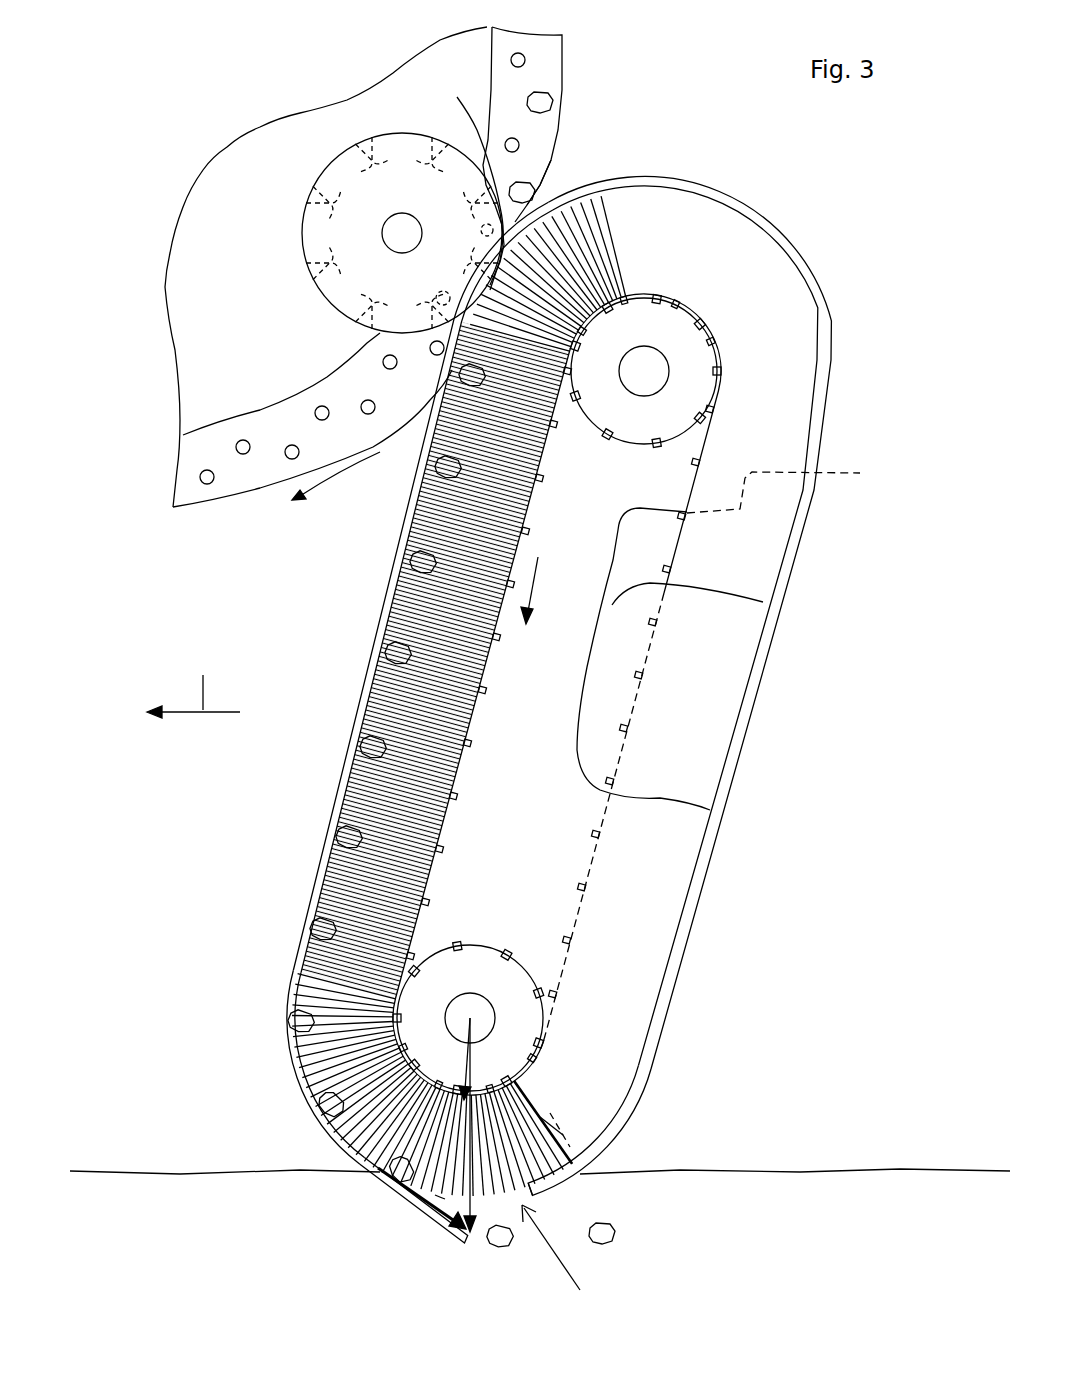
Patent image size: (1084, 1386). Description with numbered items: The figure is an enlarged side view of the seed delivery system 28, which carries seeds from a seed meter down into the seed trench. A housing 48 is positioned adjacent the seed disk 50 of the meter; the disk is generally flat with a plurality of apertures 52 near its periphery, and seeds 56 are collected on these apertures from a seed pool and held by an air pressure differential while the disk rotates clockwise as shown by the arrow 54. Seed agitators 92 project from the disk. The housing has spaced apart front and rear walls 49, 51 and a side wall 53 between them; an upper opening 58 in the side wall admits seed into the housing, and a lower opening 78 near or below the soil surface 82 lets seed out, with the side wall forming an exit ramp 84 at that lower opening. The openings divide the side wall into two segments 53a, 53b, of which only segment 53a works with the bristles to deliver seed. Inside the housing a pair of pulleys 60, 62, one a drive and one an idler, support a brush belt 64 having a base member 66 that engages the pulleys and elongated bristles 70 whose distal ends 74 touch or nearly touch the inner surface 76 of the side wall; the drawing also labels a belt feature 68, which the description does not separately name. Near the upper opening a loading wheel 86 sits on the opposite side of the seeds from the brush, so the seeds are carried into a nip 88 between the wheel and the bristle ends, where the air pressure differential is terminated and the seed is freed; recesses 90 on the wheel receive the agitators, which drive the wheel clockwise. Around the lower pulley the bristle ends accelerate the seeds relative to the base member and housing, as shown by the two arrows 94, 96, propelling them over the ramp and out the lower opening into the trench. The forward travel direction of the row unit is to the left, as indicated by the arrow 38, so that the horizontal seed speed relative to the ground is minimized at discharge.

The seed delivery system 28 is at (853, 286).
The arrow 38 is at (193, 682).
The housing 48 is at (540, 729).
The front wall 49 is at (720, 652).
The seed disk 50 is at (562, 78).
The rear wall 51 is at (860, 473).
The apertures 52 is at (287, 459).
The side wall 53 is at (793, 548).
The side wall segment 53a is at (320, 858).
The side wall segment 53b is at (735, 772).
The arrow 54 is at (340, 480).
The seeds 56 is at (527, 102).
The upper opening 58 is at (553, 167).
The pulley 60 is at (605, 442).
The pulley 62 is at (505, 960).
The belt 64 is at (500, 648).
The base member 66 is at (527, 539).
The lug 68 is at (479, 732).
The bristles 70 is at (543, 1093).
The distal ends 74 is at (567, 1133).
The inner surface 76 is at (290, 1000).
The lower opening 78 is at (580, 1290).
The soil surface 82 is at (792, 1172).
The exit ramp 84 is at (430, 1220).
The loading wheel 86 is at (354, 233).
The nip 88 is at (497, 251).
The recesses 90 is at (323, 297).
The seed agitators 92 is at (384, 358).
The arrow 94 is at (447, 1080).
The arrow 96 is at (433, 1213).